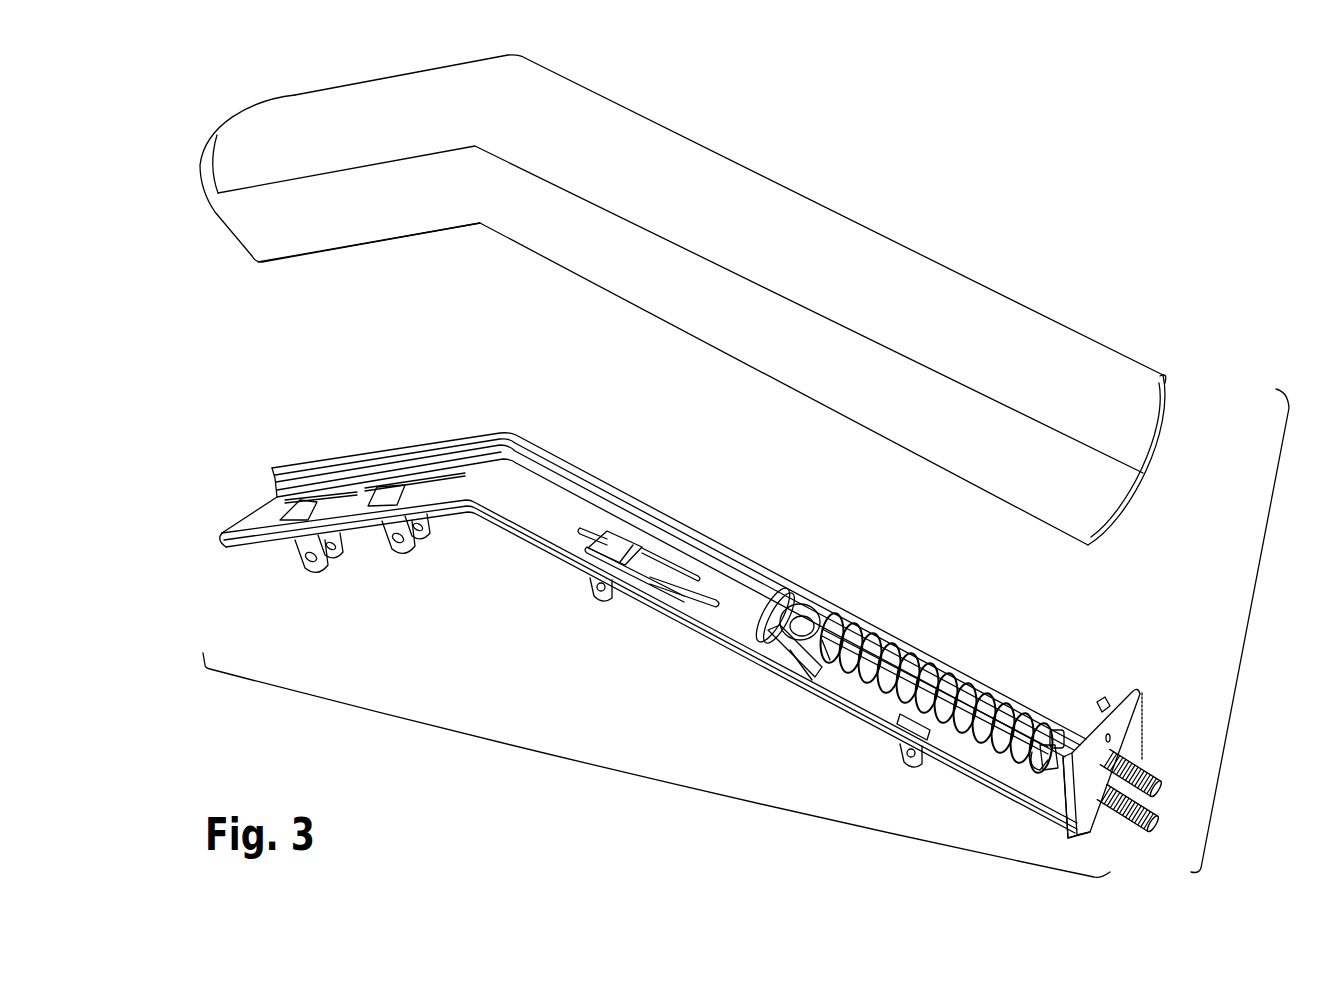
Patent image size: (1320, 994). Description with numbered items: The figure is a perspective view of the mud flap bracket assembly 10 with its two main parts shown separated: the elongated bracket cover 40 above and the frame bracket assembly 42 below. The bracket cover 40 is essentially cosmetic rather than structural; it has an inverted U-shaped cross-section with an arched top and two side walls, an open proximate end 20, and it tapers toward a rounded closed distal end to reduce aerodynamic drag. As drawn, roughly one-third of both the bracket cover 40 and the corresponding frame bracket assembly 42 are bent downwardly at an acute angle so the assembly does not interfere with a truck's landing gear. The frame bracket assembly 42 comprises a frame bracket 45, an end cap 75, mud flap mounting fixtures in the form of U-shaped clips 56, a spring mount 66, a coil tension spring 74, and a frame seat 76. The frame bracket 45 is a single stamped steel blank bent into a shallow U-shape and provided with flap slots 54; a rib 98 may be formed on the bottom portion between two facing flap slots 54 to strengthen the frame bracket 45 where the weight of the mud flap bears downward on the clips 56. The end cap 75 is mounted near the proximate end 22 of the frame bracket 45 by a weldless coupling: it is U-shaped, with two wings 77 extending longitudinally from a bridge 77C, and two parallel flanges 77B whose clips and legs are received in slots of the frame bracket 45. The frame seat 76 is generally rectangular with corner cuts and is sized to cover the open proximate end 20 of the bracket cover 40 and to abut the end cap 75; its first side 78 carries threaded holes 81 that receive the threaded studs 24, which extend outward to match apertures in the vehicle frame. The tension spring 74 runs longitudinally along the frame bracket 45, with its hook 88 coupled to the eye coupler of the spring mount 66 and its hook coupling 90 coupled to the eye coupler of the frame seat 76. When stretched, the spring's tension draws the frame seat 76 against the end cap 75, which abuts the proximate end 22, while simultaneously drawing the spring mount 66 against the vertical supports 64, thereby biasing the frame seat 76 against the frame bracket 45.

The mud flap bracket assembly 10 is at (1242, 661).
The open proximate end 20 is at (1165, 408).
The proximate end 22 is at (1065, 832).
The threaded studs 24 is at (1155, 820).
The bracket cover 40 is at (712, 300).
The frame bracket assembly 42 is at (597, 764).
The frame bracket 45 is at (653, 626).
The flap slots 54 is at (648, 576).
The U-shaped clips 56 is at (300, 550).
The vertical supports 64 is at (815, 623).
The spring mount 66 is at (770, 590).
The coil tension spring 74 is at (940, 660).
The end cap 75 is at (1032, 800).
The frame seat 76 is at (1107, 741).
The wings 77 is at (1072, 832).
The flanges 77B is at (1054, 732).
The bridge 77C is at (1098, 713).
The first side 78 is at (1128, 751).
The threaded holes 81 is at (1112, 738).
The hook 88 is at (808, 607).
The hook coupling 90 is at (1032, 768).
The rib 98 is at (700, 602).